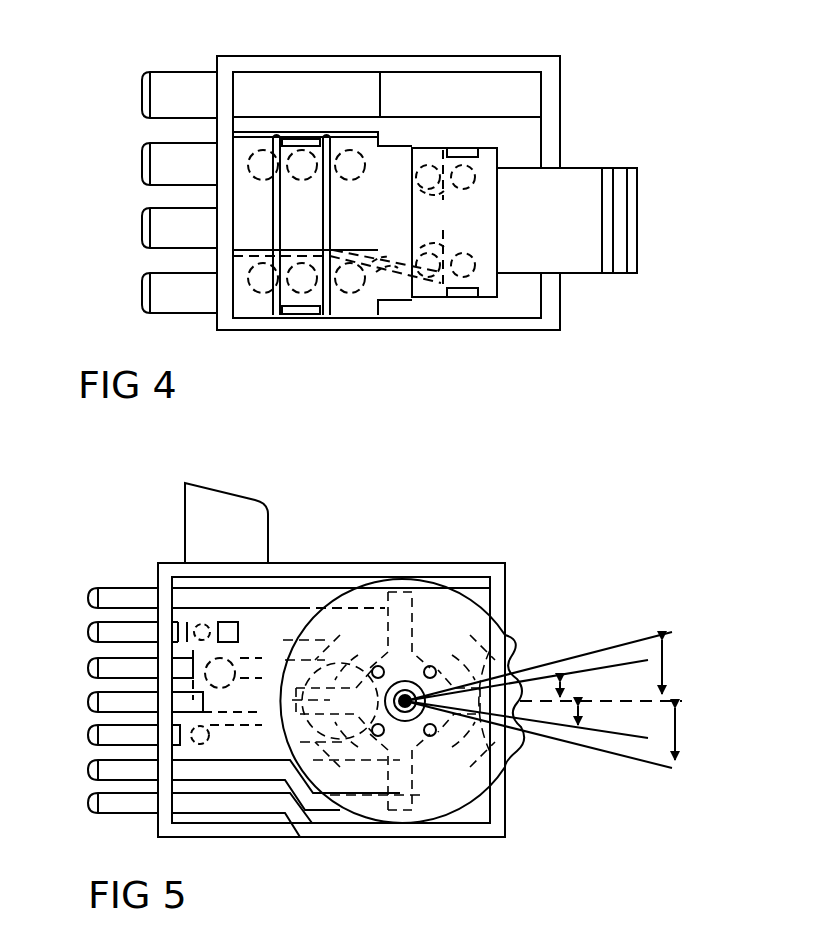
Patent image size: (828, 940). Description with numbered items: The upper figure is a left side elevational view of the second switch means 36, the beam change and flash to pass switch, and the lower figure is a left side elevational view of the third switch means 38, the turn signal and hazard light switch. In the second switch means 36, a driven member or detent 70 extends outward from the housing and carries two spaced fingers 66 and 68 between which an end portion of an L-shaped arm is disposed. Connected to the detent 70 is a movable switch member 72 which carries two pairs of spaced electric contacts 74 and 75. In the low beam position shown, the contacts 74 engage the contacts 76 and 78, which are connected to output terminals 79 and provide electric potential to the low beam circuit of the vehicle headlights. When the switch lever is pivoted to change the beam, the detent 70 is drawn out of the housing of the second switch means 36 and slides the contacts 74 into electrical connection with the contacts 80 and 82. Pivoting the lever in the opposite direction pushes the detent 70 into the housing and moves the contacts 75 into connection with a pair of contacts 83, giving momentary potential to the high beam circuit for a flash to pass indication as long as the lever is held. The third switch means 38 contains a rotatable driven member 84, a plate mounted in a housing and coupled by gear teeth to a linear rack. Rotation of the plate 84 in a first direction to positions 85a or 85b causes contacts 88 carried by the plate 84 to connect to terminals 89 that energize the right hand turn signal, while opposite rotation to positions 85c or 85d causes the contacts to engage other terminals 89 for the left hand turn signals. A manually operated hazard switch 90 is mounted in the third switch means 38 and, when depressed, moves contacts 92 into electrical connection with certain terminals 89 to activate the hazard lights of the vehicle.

In FIG. 4, the second switch means 36 is at (300, 54).
In FIG. 5, the third switch means 38 is at (350, 556).
In FIG. 4, the finger 66 is at (637, 205).
In FIG. 4, the finger 68 is at (608, 253).
In FIG. 4, the detent 70 is at (592, 180).
In FIG. 4, the movable switch member 72 is at (425, 300).
In FIG. 4, the contacts 74 is at (302, 150).
In FIG. 4, the contacts 75 is at (470, 177).
In FIG. 4, the contact 76 is at (248, 165).
In FIG. 4, the contact 78 is at (256, 290).
In FIG. 4, the output terminals 79 is at (160, 85).
In FIG. 4, the contact 80 is at (363, 155).
In FIG. 4, the contact 82 is at (352, 293).
In FIG. 4, the contacts 83 is at (432, 165).
In FIG. 5, the rotatable driven member 84 is at (450, 610).
In FIG. 5, the position 85a is at (580, 670).
In FIG. 5, the position 85b is at (670, 670).
In FIG. 5, the position 85c is at (580, 736).
In FIG. 5, the position 85d is at (694, 738).
In FIG. 5, the contacts 88 is at (380, 653).
In FIG. 5, the terminals 89 is at (100, 597).
In FIG. 5, the hazard switch 90 is at (195, 511).
In FIG. 5, the contacts 92 is at (172, 630).